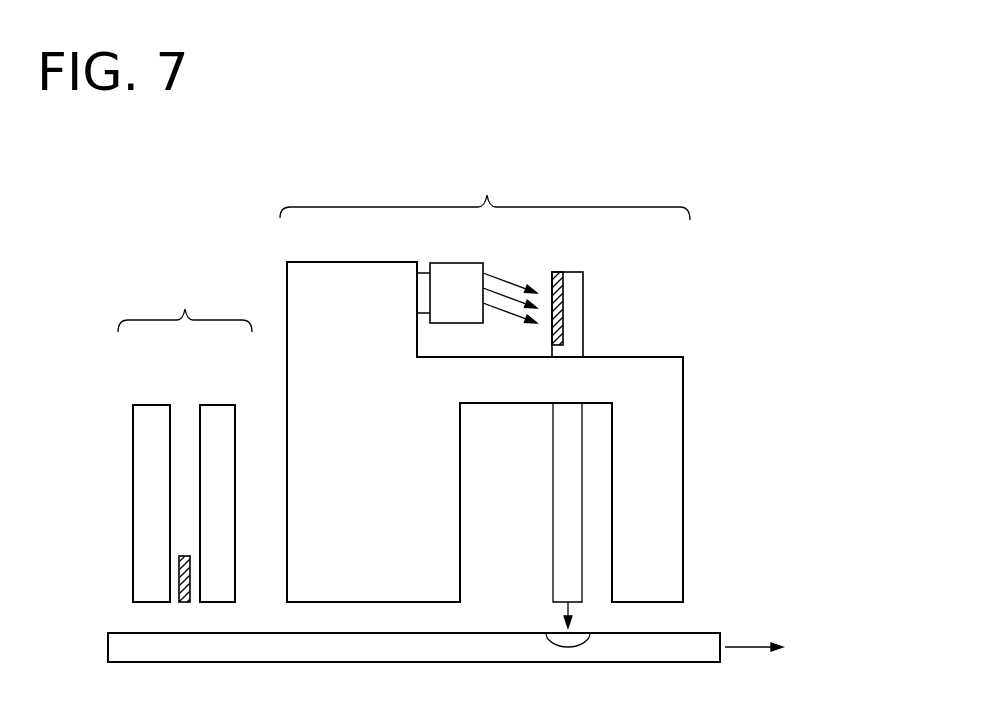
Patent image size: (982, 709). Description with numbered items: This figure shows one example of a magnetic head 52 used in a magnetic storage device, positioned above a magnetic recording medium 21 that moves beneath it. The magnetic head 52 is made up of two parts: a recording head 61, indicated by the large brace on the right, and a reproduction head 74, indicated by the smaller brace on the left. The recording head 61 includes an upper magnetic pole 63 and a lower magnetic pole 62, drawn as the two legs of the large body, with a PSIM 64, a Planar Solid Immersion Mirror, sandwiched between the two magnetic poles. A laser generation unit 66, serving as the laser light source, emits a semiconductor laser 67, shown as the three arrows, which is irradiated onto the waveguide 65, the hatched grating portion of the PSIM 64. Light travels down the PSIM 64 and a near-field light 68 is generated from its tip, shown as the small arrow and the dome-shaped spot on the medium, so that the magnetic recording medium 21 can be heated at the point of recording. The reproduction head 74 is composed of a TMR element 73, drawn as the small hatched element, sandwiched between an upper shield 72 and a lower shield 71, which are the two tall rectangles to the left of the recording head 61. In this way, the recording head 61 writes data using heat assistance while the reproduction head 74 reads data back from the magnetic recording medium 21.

The magnetic recording medium 21 is at (698, 642).
The magnetic head 52 is at (769, 255).
The recording head 61 is at (485, 187).
The lower magnetic pole 62 is at (448, 442).
The upper magnetic pole 63 is at (673, 442).
The PSIM 64 is at (572, 325).
The waveguide 65 is at (562, 293).
The laser generation unit 66 is at (450, 262).
The semiconductor laser 67 is at (510, 282).
The near-field light 68 is at (565, 607).
The lower shield 71 is at (145, 405).
The upper shield 72 is at (228, 405).
The TMR element 73 is at (182, 556).
The reproduction head 74 is at (185, 300).